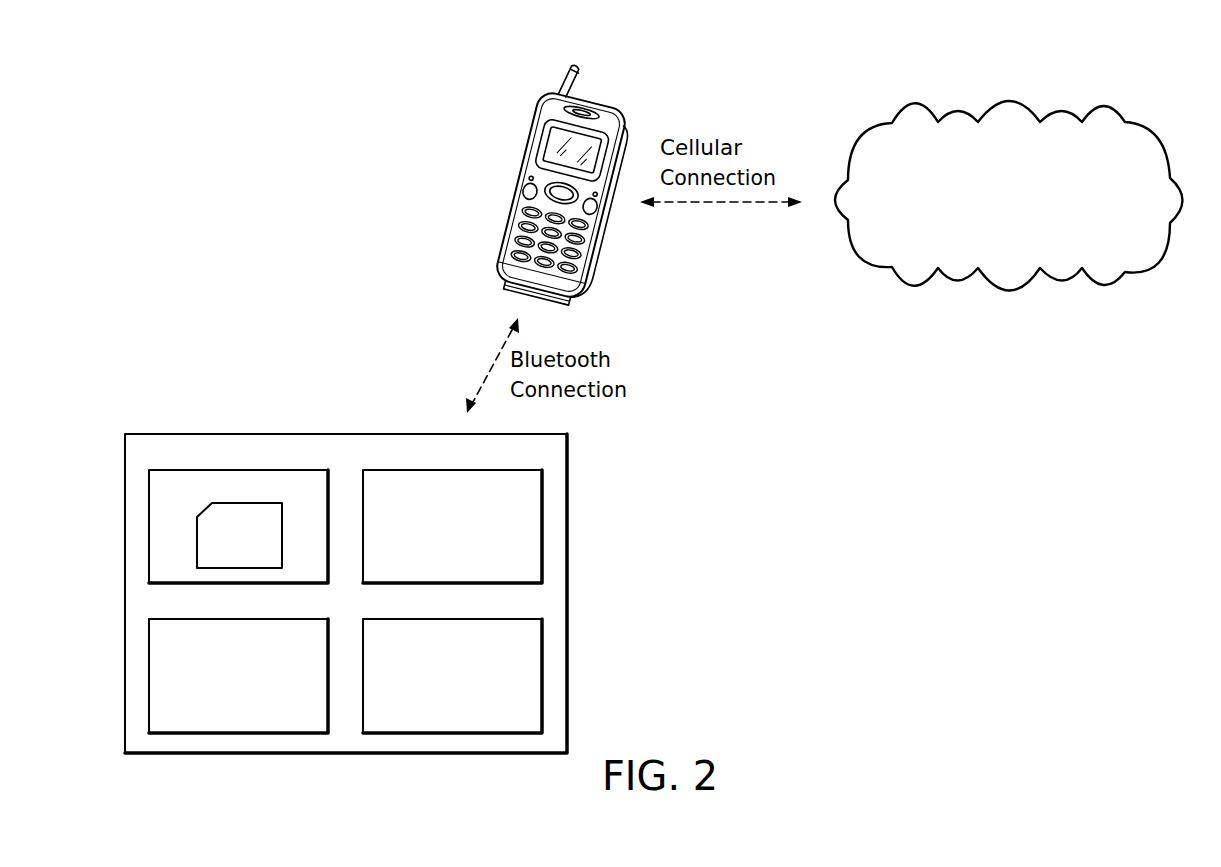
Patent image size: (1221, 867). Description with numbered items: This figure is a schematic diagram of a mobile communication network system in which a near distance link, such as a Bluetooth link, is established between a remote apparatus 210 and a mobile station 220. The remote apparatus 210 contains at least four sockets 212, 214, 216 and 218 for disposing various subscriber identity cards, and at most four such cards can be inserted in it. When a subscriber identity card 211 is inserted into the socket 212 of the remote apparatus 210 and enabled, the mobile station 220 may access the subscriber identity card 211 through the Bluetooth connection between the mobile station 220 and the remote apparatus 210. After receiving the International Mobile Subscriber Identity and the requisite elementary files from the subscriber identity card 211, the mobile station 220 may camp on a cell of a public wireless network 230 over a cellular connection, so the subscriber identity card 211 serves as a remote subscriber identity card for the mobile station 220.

The remote apparatus 210 is at (347, 432).
The subscriber identity card 211 is at (247, 502).
The socket 212 is at (150, 470).
The socket 214 is at (364, 469).
The socket 216 is at (150, 619).
The socket 218 is at (364, 619).
The mobile station 220 is at (606, 96).
The public wireless network 230 is at (1010, 102).